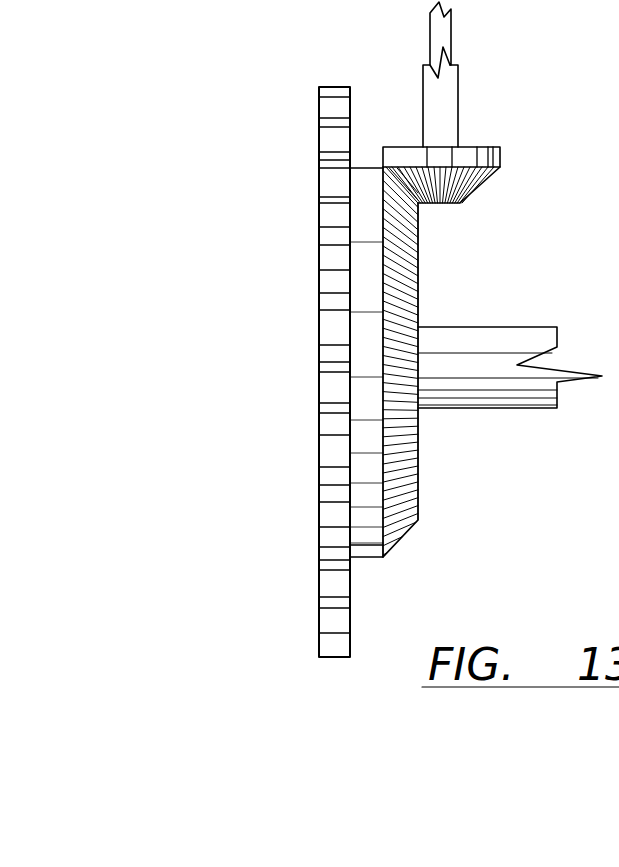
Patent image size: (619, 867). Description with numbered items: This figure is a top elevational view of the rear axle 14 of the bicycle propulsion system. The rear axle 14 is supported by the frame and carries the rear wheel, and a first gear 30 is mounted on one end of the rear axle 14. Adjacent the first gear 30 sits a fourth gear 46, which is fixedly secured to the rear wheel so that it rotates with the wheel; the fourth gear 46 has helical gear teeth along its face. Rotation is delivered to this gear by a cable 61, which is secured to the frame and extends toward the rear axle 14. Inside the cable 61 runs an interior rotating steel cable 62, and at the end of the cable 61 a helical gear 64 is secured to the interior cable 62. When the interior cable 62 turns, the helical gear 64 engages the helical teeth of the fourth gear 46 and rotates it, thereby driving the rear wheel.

The rear axle 14 is at (490, 378).
The first gear 30 is at (333, 143).
The fourth gear 46 is at (400, 278).
The cable 61 is at (450, 40).
The interior rotating steel cable 62 is at (445, 112).
The helical gear 64 is at (495, 156).